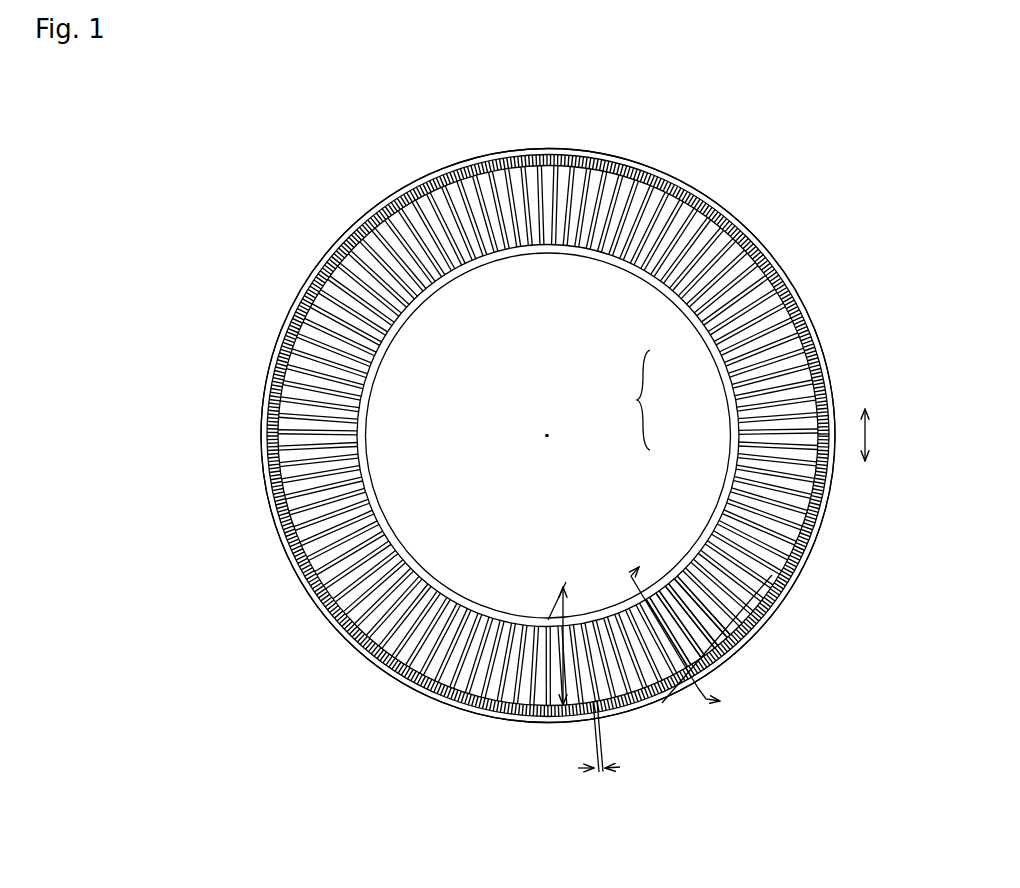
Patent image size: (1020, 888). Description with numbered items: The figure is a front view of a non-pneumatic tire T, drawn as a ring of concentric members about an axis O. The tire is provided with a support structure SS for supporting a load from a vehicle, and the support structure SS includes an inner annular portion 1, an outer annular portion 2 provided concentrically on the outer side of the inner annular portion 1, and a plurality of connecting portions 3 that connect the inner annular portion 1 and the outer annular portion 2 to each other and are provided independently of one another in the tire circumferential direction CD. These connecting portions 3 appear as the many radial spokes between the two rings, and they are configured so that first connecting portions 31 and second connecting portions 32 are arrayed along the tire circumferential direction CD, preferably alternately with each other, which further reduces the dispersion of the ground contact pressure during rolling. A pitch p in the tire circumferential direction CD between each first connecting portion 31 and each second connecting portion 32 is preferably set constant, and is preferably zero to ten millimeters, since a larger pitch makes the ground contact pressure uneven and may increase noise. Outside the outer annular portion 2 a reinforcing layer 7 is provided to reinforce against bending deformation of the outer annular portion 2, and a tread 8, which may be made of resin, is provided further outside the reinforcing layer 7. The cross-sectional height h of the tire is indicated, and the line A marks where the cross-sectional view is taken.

The non-pneumatic tire T is at (770, 229).
The inner annular portion 1 is at (703, 335).
The outer annular portion 2 is at (777, 328).
The connecting portions 3 is at (773, 422).
The reinforcing layer 7 is at (822, 368).
The tread 8 is at (834, 393).
The first connecting portions 31 is at (733, 645).
The second connecting portions 32 is at (738, 626).
The support structure SS is at (625, 400).
The axis O is at (535, 439).
The tire circumferential direction CD is at (890, 435).
The cross-sectional height h is at (566, 582).
The pitch p is at (589, 742).
The line A- A is at (695, 635).